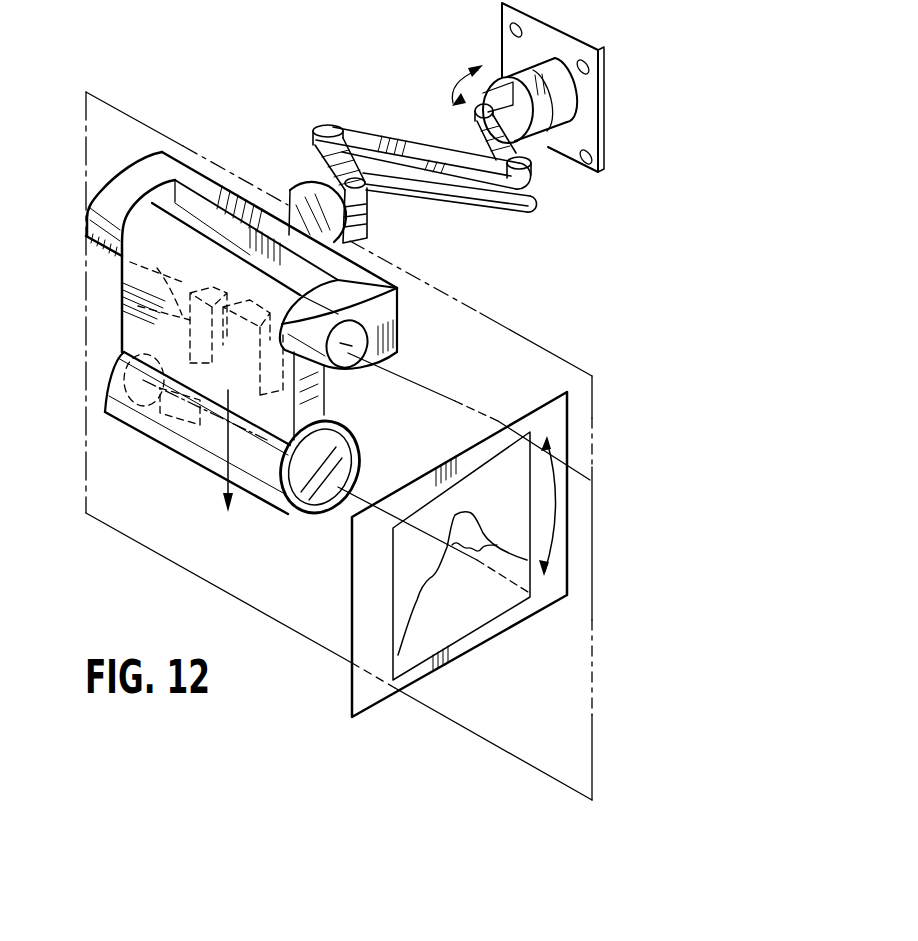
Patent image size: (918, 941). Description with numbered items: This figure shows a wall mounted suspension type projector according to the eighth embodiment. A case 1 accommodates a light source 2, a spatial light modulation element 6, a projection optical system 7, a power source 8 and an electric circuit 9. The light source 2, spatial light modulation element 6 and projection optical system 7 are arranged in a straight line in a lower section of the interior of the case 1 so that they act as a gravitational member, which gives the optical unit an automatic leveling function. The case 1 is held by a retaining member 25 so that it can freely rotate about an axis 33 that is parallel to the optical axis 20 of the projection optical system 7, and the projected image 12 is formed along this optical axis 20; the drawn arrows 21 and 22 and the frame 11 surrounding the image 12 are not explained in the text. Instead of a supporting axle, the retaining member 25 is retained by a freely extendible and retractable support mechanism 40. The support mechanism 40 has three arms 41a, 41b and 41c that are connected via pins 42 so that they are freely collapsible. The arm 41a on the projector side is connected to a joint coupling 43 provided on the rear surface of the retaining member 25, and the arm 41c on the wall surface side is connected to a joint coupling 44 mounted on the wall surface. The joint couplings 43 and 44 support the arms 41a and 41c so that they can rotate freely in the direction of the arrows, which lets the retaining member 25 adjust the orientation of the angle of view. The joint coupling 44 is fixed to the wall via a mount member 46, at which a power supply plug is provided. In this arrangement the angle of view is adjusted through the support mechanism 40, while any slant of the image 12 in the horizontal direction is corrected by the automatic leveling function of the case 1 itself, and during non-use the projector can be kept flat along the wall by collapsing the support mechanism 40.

The case 1 is at (215, 327).
The light source 2 is at (312, 451).
The spatial light modulation element 6 is at (172, 460).
The projection optical system 7 is at (293, 490).
The power source 8 is at (122, 258).
The electric circuit 9 is at (262, 193).
The display frame 11 is at (358, 697).
The image 12 is at (415, 650).
The optical axis 20 is at (467, 549).
The movement direction arrow 21 is at (217, 456).
The plane edge 22 is at (490, 742).
The retaining member 25 is at (163, 158).
The axis 33 is at (412, 381).
The support mechanism 40 is at (471, 130).
The arm 41a is at (330, 127).
The arm 41b is at (395, 132).
The arm 41c is at (470, 190).
The pin 42 is at (325, 127).
The joint coupling 43 is at (307, 193).
The joint coupling 44 is at (603, 105).
The mount member 46 is at (587, 90).